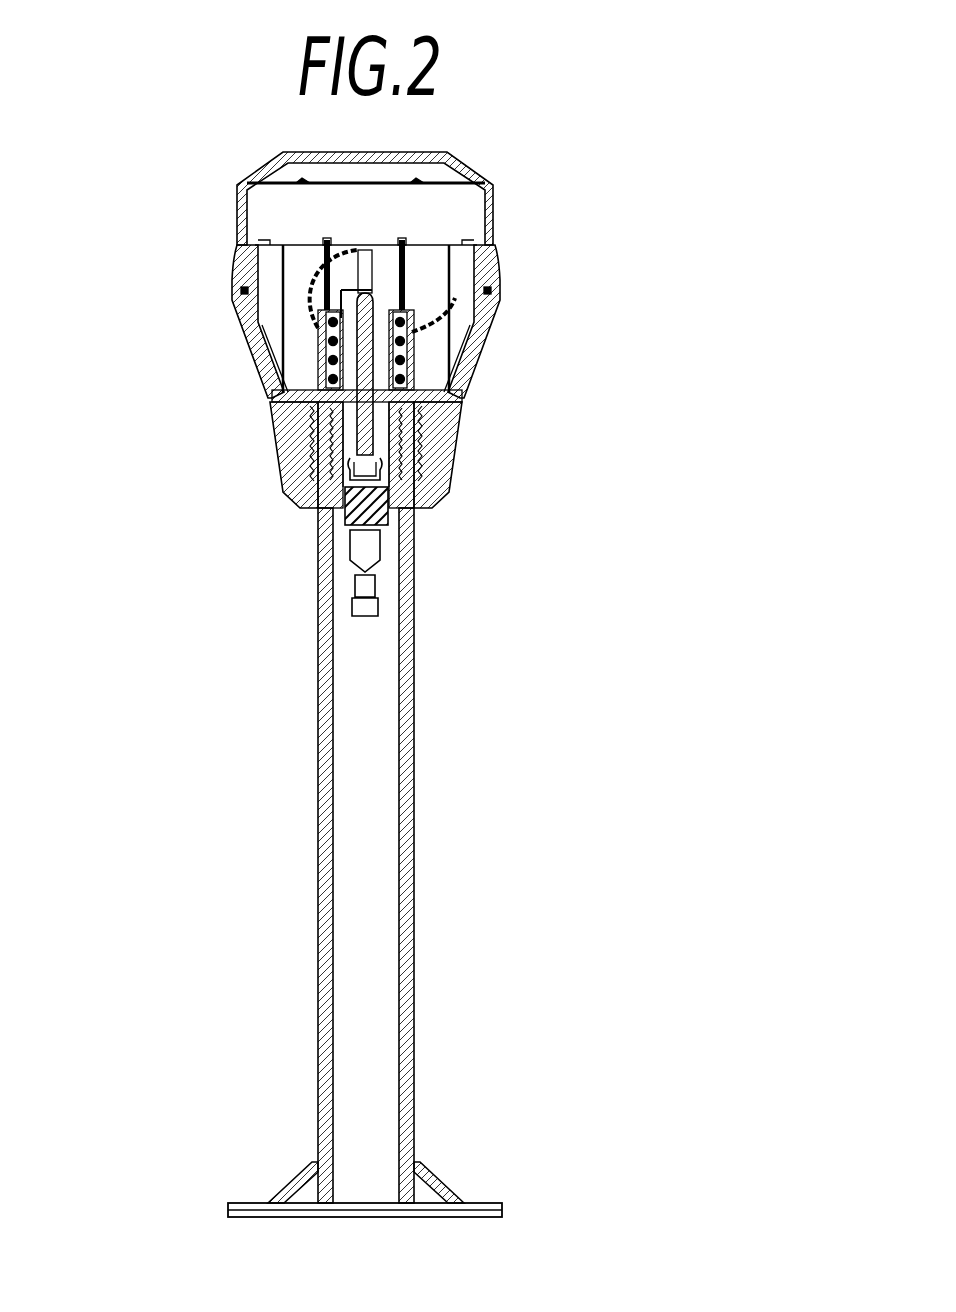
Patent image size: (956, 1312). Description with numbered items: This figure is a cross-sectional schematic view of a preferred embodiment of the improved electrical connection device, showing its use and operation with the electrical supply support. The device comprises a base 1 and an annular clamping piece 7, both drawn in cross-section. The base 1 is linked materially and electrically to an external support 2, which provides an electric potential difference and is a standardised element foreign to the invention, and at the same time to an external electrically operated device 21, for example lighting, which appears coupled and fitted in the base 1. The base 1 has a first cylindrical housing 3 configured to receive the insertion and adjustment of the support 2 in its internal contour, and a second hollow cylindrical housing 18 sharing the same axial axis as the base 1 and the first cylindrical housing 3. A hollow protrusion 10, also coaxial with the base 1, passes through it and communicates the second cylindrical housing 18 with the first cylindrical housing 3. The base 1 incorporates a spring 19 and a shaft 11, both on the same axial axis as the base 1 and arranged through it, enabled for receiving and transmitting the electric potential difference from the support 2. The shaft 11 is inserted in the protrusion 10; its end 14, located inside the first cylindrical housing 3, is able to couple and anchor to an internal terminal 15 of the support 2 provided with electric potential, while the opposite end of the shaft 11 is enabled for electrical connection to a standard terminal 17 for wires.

The base 1 is at (480, 352).
The external support 2 is at (431, 775).
The first cylindrical housing 3 is at (427, 437).
The annular clamping piece 7 is at (278, 451).
The hollow protrusion 10 is at (397, 412).
The shaft 11 is at (355, 430).
The end of the shaft 14 is at (355, 476).
The internal terminal 15 is at (390, 478).
The standard terminal for wires 17 is at (310, 282).
The second hollow cylindrical housing 18 is at (420, 340).
The spring 19 is at (313, 343).
The external electrically operated device 21 is at (494, 207).